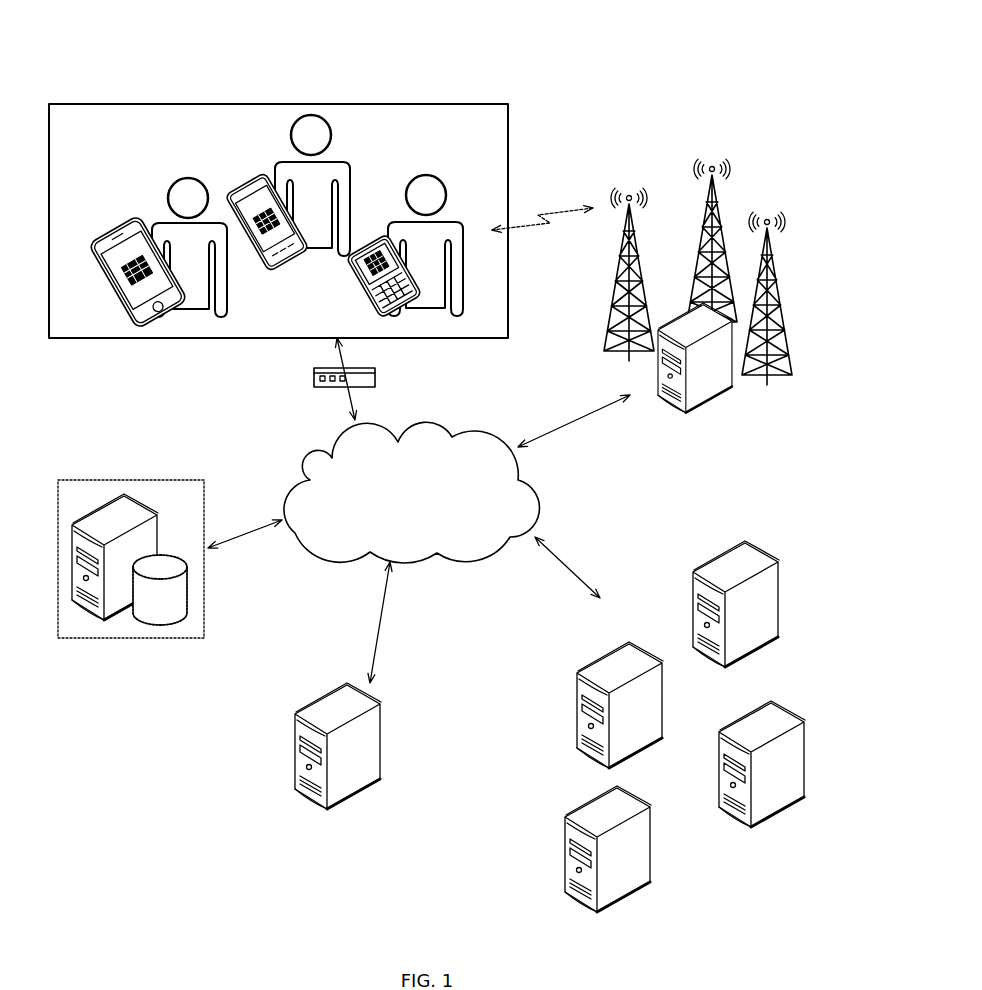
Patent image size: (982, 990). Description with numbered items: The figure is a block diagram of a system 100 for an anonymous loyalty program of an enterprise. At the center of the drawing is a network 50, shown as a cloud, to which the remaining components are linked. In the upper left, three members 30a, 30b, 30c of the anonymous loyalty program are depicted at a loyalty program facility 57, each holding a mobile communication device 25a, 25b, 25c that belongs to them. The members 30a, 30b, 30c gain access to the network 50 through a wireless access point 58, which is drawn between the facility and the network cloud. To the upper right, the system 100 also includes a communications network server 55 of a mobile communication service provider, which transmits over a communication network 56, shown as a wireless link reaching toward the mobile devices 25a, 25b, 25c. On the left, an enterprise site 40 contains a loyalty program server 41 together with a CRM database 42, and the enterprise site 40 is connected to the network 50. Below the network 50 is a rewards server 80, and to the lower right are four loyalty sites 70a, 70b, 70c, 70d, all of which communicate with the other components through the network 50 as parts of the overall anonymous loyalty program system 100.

The system 100 is at (631, 109).
The mobile communication device 25a is at (366, 242).
The mobile communication device 25b is at (244, 186).
The mobile communication device 25c is at (104, 233).
The member 30a is at (453, 222).
The member 30b is at (338, 163).
The member 30c is at (163, 222).
The enterprise site 40 is at (131, 560).
The loyalty program server 41 is at (95, 618).
The CRM database 42 is at (155, 620).
The network 50 is at (446, 423).
The communications network server 55 is at (705, 401).
The communication network 56 is at (540, 222).
The loyalty program facility 57 is at (287, 338).
The wireless access point 58 is at (320, 389).
The loyalty site 70a is at (693, 583).
The loyalty site 70b is at (577, 690).
The loyalty site 70c is at (719, 742).
The loyalty site 70d is at (565, 827).
The rewards server 80 is at (293, 732).